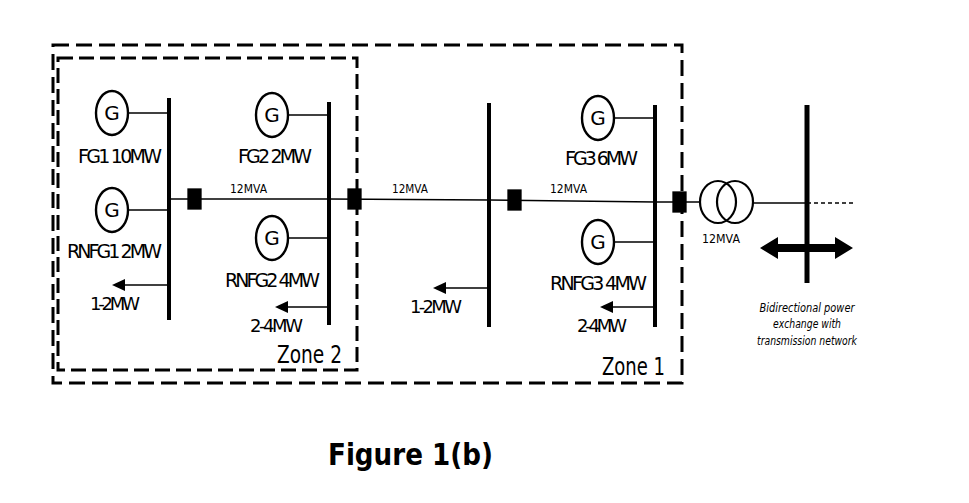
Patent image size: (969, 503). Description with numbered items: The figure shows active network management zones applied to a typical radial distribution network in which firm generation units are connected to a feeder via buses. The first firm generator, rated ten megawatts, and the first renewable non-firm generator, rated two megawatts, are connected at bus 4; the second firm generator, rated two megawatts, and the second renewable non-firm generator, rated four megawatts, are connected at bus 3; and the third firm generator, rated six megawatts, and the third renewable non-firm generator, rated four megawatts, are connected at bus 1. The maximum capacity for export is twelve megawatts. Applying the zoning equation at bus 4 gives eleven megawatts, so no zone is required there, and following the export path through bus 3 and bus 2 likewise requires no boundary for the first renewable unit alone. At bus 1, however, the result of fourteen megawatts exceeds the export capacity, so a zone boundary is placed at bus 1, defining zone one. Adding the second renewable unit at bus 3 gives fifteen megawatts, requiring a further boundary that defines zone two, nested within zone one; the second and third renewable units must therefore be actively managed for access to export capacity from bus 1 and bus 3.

The bus 1 is at (655, 202).
The bus 2 is at (489, 202).
The bus 3 is at (329, 200).
The bus 4 is at (169, 197).